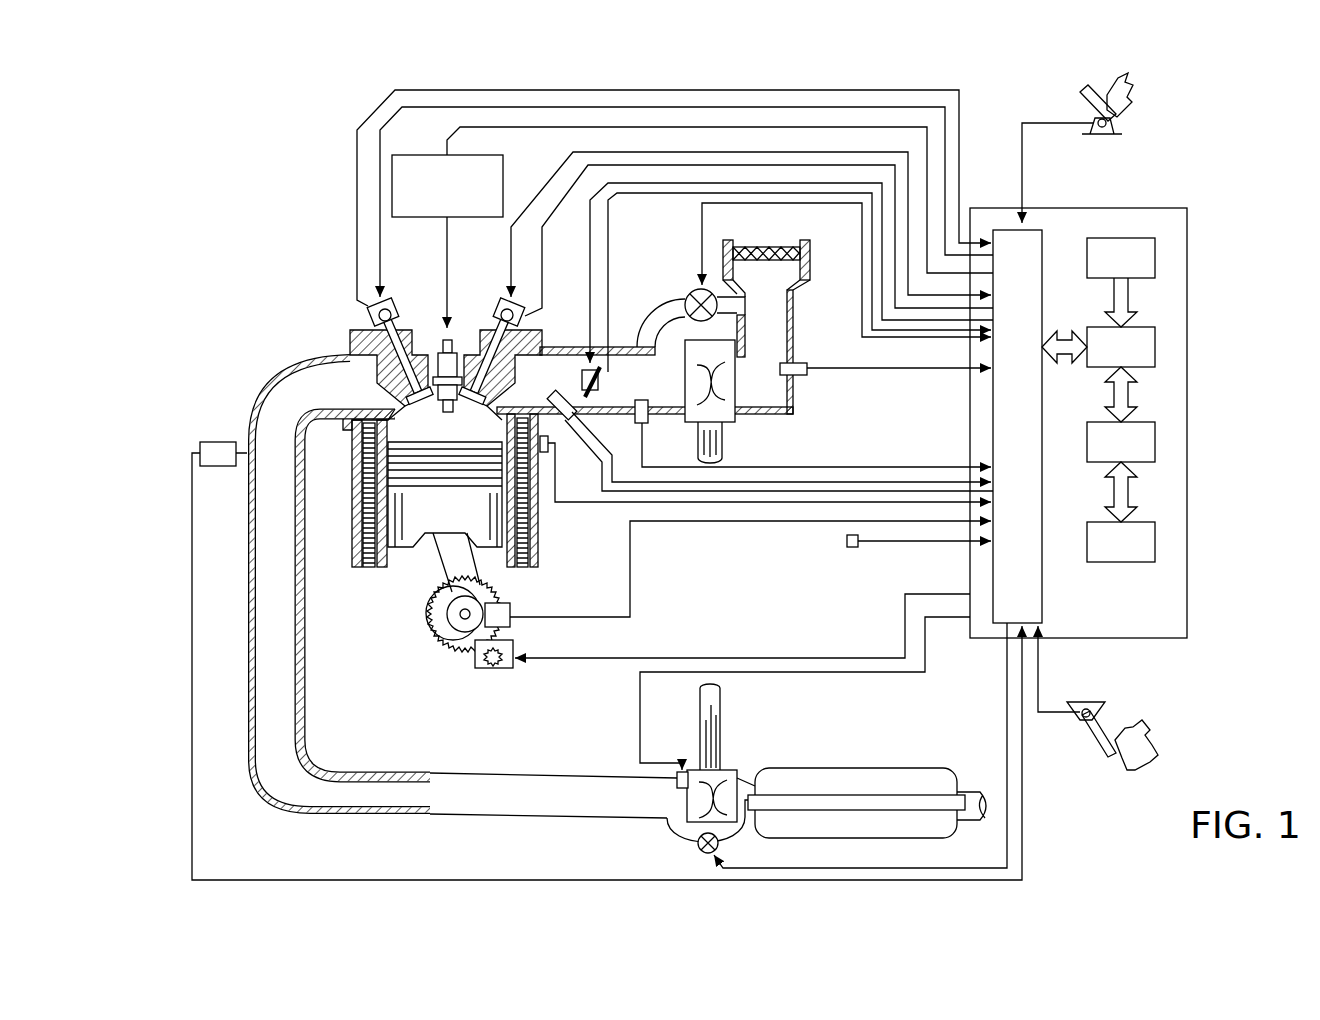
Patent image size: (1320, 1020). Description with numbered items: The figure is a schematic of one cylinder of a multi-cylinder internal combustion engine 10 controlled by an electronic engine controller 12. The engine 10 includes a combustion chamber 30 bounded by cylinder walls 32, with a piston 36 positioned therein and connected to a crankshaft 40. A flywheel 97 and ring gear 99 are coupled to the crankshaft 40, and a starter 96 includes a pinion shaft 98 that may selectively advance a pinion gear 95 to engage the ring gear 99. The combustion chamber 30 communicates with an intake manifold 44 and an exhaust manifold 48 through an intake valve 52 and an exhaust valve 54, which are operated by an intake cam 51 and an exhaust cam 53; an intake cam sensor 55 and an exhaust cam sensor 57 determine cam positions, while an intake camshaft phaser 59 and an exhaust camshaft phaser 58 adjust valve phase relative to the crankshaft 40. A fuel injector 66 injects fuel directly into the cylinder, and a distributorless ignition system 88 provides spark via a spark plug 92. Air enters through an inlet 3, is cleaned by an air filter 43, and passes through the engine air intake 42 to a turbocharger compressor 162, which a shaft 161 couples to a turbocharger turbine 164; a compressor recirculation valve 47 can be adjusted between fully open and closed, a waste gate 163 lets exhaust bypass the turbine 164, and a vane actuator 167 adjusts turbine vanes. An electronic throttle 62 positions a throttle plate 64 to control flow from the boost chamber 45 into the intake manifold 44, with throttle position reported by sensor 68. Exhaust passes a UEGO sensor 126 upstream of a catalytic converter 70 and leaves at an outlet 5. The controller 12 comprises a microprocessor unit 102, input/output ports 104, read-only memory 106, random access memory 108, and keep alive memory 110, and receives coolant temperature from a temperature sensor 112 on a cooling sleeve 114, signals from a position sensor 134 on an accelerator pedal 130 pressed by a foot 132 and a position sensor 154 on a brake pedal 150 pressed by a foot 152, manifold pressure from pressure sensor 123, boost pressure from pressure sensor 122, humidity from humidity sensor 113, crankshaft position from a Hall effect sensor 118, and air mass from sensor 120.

The inlet 3 is at (771, 238).
The outlet 5 is at (975, 788).
The internal combustion engine 10 is at (290, 290).
The electronic engine controller 12 is at (1190, 208).
The combustion chamber 30 is at (443, 425).
The cylinder walls 32 is at (392, 557).
The piston 36 is at (430, 520).
The crankshaft 40 is at (448, 635).
The engine air intake 42 is at (678, 248).
The air filter 43 is at (762, 262).
The intake manifold 44 is at (573, 386).
The boost chamber 45 is at (662, 394).
The compressor recirculation valve 47 is at (690, 292).
The exhaust manifold 48 is at (336, 398).
The intake cam 51 is at (497, 298).
The intake valve 52 is at (487, 390).
The exhaust cam 53 is at (388, 298).
The exhaust valve 54 is at (403, 388).
The intake cam sensor 55 is at (520, 297).
The exhaust cam sensor 57 is at (368, 320).
The exhaust camshaft phaser 58 is at (392, 308).
The intake camshaft phaser 59 is at (502, 317).
The electronic throttle 62 is at (598, 383).
The throttle plate 64 is at (598, 393).
The fuel injector 66 is at (549, 446).
The throttle position sensor 68 is at (603, 357).
The catalytic converter 70 is at (790, 768).
The distributorless ignition system 88 is at (405, 155).
The spark plug 92 is at (448, 325).
The pinion gear 95 is at (492, 668).
The starter 96 is at (513, 668).
The flywheel 97 is at (440, 615).
The pinion shaft 98 is at (493, 670).
The ring gear 99 is at (462, 655).
The microprocessor unit 102 is at (1157, 350).
The input/output ports 104 is at (1043, 235).
The read-only memory 106 is at (1157, 258).
The random access memory 108 is at (1157, 446).
The keep alive memory 110 is at (1157, 540).
The temperature sensor 112 is at (577, 490).
The humidity sensor 113 is at (852, 548).
The cooling sleeve 114 is at (538, 522).
The Hall effect sensor 118 is at (510, 603).
The air mass sensor 120 is at (800, 363).
The pressure sensor 122 is at (645, 423).
The pressure sensor 123 is at (575, 415).
The UEGO sensor 126 is at (200, 448).
The accelerator pedal 130 is at (1080, 100).
The foot 132 is at (1130, 85).
The position sensor 134 is at (1122, 128).
The brake pedal 150 is at (1110, 758).
The foot 152 is at (1140, 730).
The position sensor 154 is at (1078, 712).
The shaft 161 is at (722, 440).
The turbocharger compressor 162 is at (735, 400).
The waste gate 163 is at (700, 852).
The turbocharger turbine 164 is at (680, 768).
The vane actuator 167 is at (676, 778).